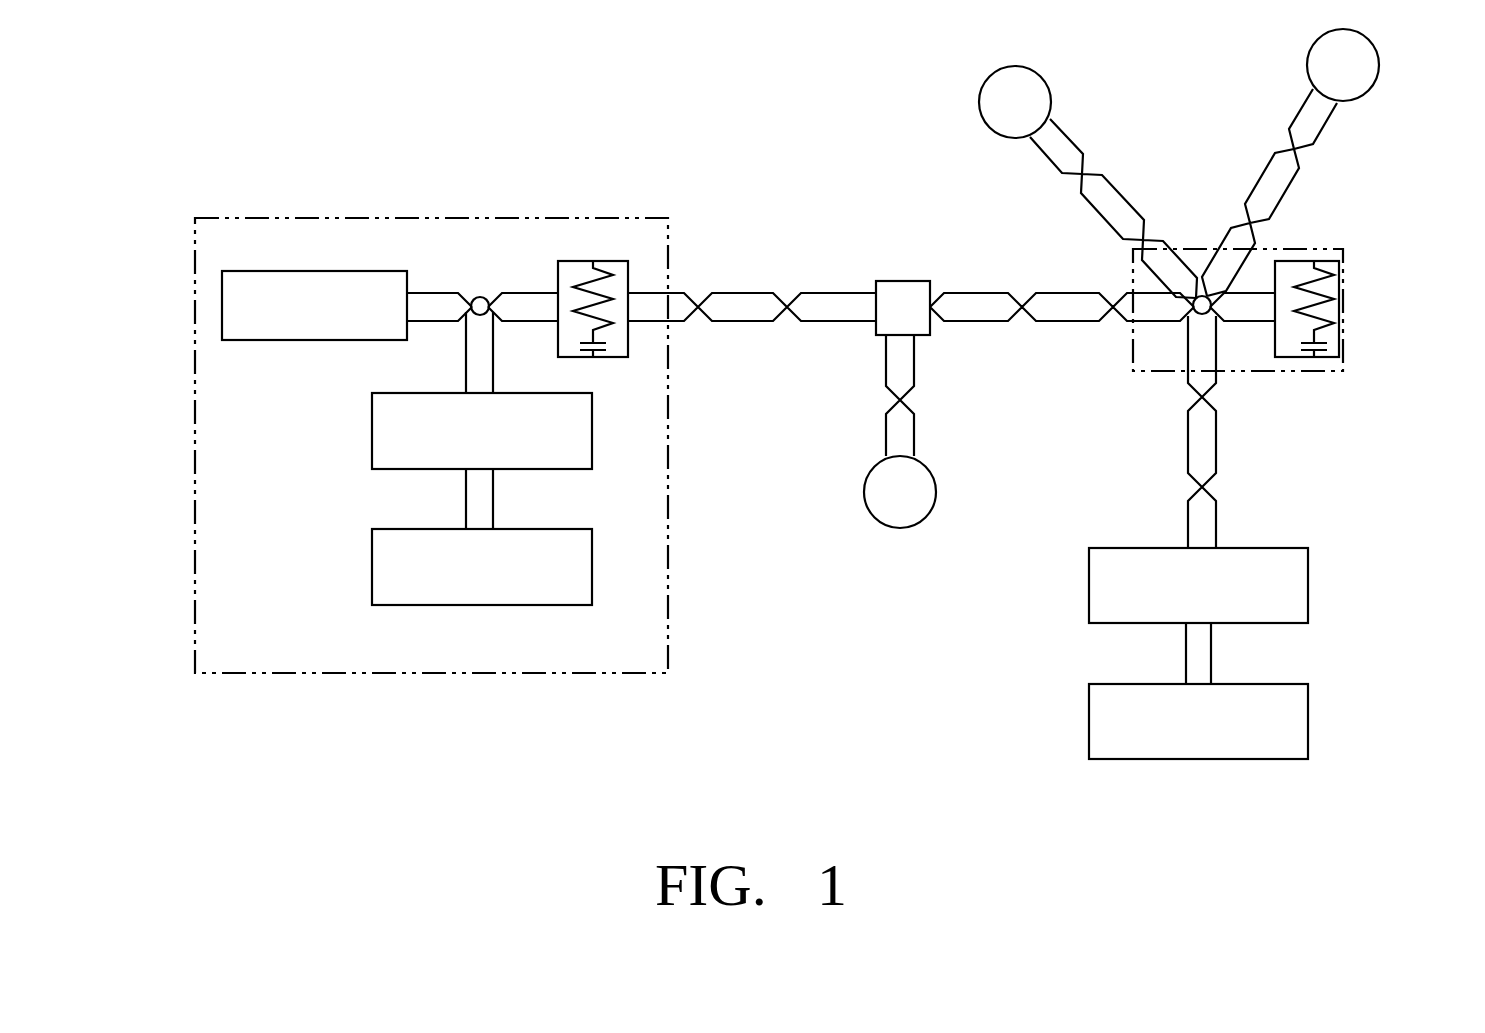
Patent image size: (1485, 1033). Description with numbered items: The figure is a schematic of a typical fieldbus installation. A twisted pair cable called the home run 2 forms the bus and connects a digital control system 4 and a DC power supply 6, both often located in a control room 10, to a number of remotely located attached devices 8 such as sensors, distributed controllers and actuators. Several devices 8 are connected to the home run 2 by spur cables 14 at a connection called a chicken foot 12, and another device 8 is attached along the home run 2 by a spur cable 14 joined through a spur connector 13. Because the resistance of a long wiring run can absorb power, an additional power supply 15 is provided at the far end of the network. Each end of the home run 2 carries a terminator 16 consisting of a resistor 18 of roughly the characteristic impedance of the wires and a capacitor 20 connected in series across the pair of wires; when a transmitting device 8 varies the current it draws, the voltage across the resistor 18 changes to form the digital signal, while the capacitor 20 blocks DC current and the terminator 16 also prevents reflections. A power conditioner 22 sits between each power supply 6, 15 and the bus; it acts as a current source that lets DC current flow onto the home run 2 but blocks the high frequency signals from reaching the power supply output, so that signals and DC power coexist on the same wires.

The home run 2 is at (836, 292).
The digital control system 4 is at (283, 271).
The DC power supply 6 is at (593, 571).
The attached device 8 is at (878, 524).
The control room 10 is at (541, 218).
The chicken foot 12 is at (1310, 249).
The spur connector 13 is at (904, 281).
The spur cable 14 is at (917, 368).
The additional power supply 15 is at (1309, 704).
The terminator 16 is at (624, 252).
The resistor 18 is at (603, 288).
The capacitor 20 is at (600, 356).
The power conditioner 22 is at (594, 420).